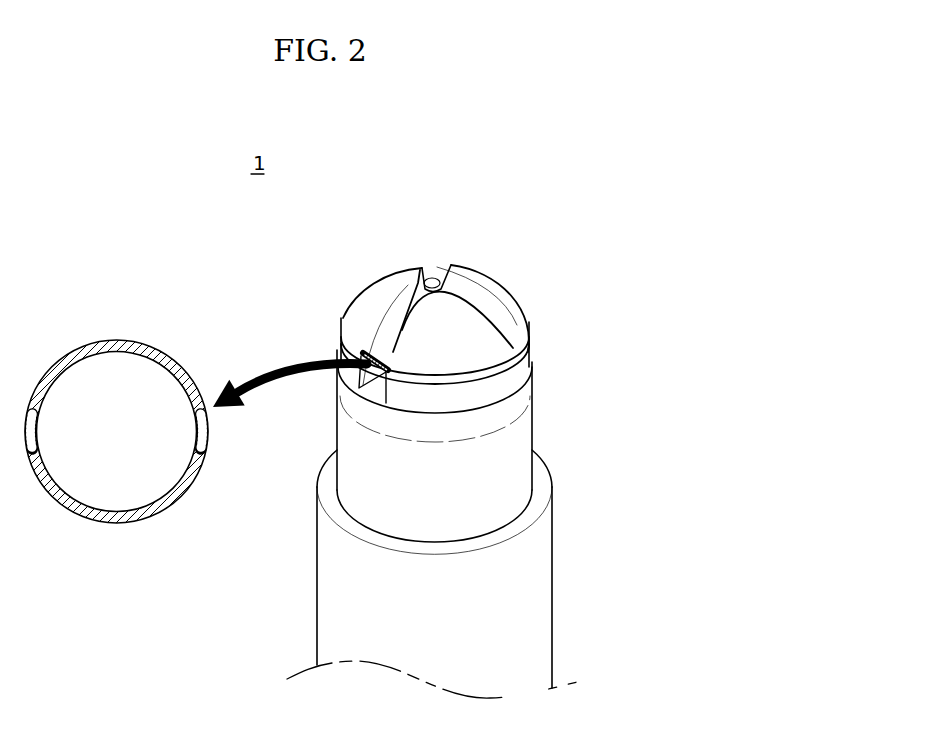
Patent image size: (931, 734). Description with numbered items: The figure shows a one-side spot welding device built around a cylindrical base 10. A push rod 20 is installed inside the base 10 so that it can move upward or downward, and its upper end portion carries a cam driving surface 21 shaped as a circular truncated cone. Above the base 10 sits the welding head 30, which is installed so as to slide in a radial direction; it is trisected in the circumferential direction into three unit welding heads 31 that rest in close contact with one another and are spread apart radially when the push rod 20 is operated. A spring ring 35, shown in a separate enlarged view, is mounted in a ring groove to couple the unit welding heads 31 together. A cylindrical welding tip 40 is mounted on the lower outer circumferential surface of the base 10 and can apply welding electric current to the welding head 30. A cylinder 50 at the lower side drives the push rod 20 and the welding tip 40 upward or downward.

The base 10 is at (373, 405).
The push rod 20 is at (431, 283).
The cam driving surface 21 is at (414, 295).
The welding head 30 is at (526, 271).
The unit welding heads 31 is at (367, 303).
The spring ring 35 is at (144, 347).
The welding tip 40 is at (517, 435).
The cylinder 50 is at (533, 604).